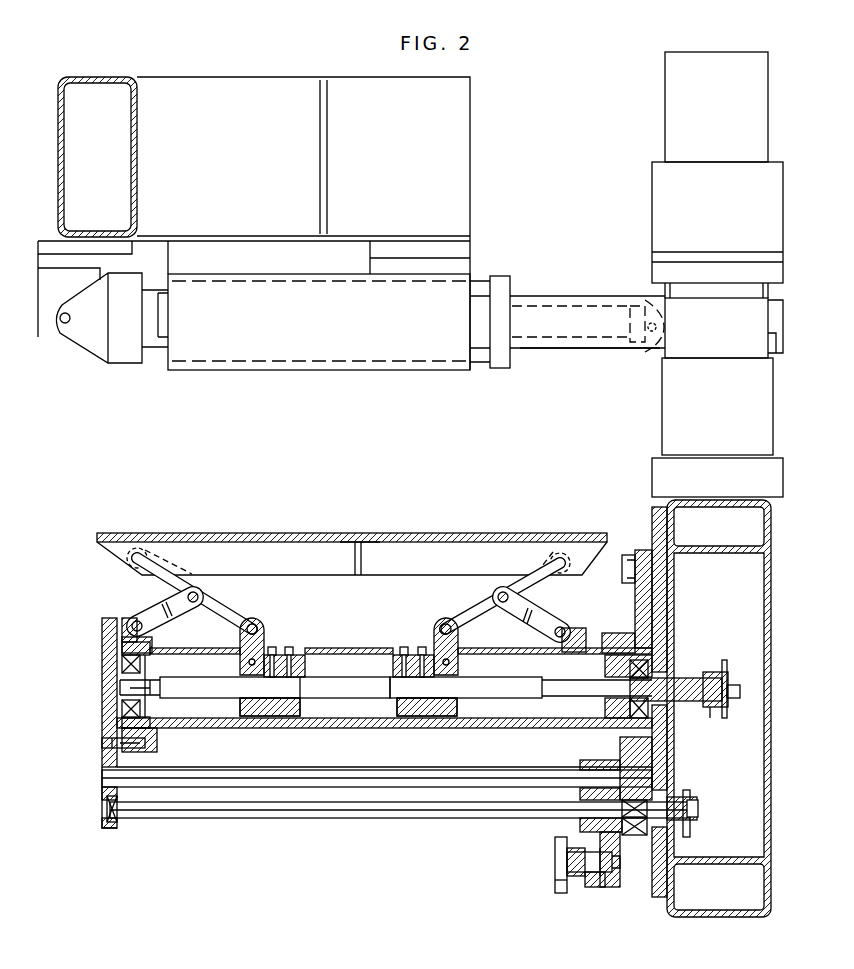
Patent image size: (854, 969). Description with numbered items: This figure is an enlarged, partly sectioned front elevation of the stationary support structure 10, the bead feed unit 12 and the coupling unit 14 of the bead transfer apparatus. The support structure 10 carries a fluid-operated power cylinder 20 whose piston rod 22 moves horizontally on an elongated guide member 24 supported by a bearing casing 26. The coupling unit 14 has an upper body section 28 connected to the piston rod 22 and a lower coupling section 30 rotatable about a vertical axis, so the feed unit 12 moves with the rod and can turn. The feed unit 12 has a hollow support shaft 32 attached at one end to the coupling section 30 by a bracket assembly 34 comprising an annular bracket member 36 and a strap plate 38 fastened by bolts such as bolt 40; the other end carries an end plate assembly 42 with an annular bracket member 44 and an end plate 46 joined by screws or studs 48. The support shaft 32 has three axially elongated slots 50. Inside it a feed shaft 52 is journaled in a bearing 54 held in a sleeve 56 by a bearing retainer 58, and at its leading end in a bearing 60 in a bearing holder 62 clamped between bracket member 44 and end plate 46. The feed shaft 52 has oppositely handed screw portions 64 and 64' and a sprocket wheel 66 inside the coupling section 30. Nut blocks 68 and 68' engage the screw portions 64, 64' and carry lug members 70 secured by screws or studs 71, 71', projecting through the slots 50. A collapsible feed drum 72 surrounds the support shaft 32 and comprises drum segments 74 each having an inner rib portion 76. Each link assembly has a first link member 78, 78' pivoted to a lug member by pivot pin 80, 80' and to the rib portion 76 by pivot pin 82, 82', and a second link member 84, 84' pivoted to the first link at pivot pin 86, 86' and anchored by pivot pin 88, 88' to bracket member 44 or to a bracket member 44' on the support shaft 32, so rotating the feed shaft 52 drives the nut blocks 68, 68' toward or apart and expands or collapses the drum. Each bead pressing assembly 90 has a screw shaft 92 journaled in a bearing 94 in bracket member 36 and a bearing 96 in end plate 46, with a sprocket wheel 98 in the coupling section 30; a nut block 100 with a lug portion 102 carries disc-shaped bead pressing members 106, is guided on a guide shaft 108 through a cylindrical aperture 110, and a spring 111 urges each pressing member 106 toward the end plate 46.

The stationary support structure 10 is at (483, 156).
The bead feed unit 12 is at (318, 824).
The coupling unit 14 is at (660, 121).
The fluid-operated power cylinder 20 is at (368, 365).
The piston rod 22 is at (557, 304).
The elongated guide member 24 is at (600, 350).
The bearing casing 26 is at (266, 372).
The upper body section 28 is at (652, 193).
The lower coupling section 30 is at (724, 576).
The hollow support shaft 32 is at (345, 728).
The bracket assembly 34 is at (647, 528).
The annular bracket member 36 is at (636, 597).
The strap plate 38 is at (657, 898).
The bolt 40 is at (622, 566).
The end plate assembly 42 is at (98, 640).
The annular bracket member 44 is at (159, 746).
The bracket member 44' is at (613, 625).
The end plate 46 is at (103, 722).
The screw or stud 48 is at (102, 740).
The axially elongated slot 50 is at (350, 656).
The feed shaft 52 is at (352, 698).
The bearing 54 is at (632, 688).
The sleeve 56 is at (602, 730).
The bearing retainer 58 is at (662, 674).
The bearing 60 is at (125, 668).
The bearing holder 62 is at (124, 622).
The axial screw portion 64 is at (254, 710).
The axial screw portion 64' is at (486, 710).
The sprocket wheel 66 is at (713, 716).
The nut block 68 is at (270, 725).
The nut block 68' is at (427, 727).
The lug member 70 is at (240, 645).
The screw or stud 71 is at (289, 643).
The screw or stud 71' is at (404, 647).
The collapsible feed drum 72 is at (426, 530).
The drum segment 74 is at (368, 537).
The rib portion 76 is at (361, 572).
The first link member 78 is at (257, 630).
The first link member 78' is at (443, 631).
The pivot pin 80 is at (268, 619).
The pivot pin 80' is at (425, 618).
The pivot pin 82 is at (138, 538).
The pivot pin 82' is at (559, 541).
The second link member 84 is at (185, 593).
The second link member 84' is at (502, 604).
The pivot pin 86 is at (190, 600).
The pivot pin 86' is at (509, 603).
The pivot pin 88 is at (121, 617).
The pivot pin 88' is at (569, 615).
The bead pressing assembly 90 is at (572, 890).
The screw shaft 92 is at (400, 820).
The bearing 94 is at (622, 836).
The bearing 96 is at (118, 816).
The sprocket wheel 98 is at (692, 793).
The nut block 100 is at (580, 826).
The lug portion 102 is at (608, 888).
The bead pressing member 106 is at (556, 862).
The guide shaft 108 is at (258, 770).
The cylindrical aperture 110 is at (578, 768).
The spring 111 is at (585, 880).